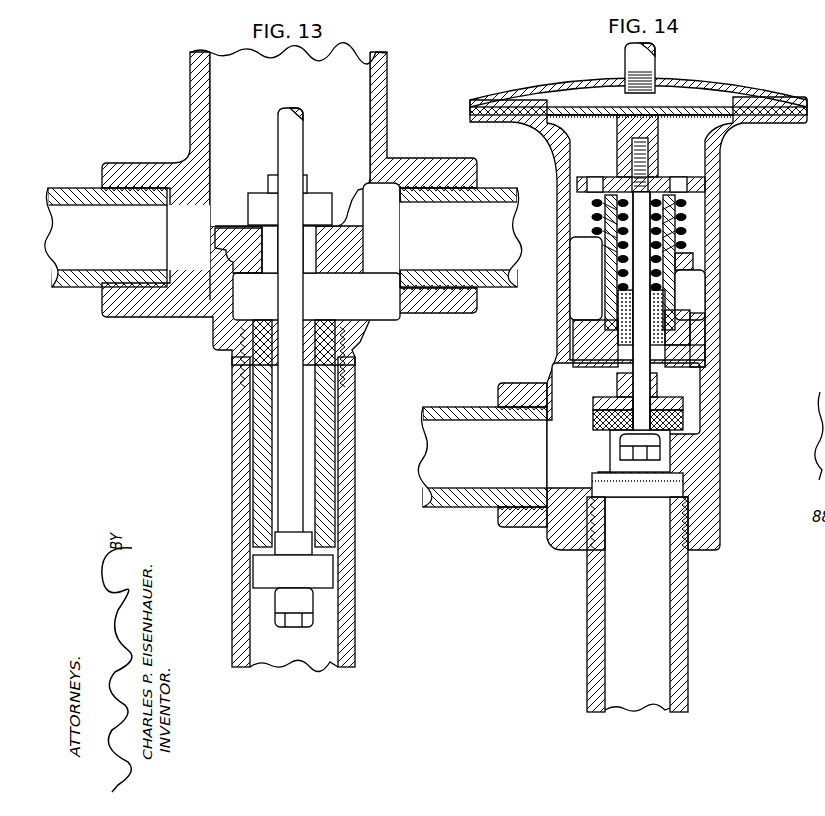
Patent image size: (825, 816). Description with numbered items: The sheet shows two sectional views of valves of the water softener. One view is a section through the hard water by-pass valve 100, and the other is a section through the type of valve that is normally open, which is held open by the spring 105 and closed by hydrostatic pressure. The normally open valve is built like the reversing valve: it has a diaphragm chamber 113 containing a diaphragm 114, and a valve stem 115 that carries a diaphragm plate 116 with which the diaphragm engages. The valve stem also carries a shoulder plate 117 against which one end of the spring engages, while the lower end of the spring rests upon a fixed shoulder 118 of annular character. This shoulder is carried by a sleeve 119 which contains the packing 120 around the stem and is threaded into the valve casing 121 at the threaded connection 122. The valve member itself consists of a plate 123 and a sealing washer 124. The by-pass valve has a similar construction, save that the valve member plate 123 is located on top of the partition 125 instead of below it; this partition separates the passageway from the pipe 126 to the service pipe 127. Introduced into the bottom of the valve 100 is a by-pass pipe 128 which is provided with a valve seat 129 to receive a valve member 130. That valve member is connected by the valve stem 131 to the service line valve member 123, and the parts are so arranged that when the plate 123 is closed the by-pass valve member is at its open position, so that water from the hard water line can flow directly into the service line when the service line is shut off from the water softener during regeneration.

In FIG. 13, the valve 100 is at (190, 62).
In FIG. 14, the spring 105 is at (692, 242).
In FIG. 14, the diaphragm chamber 113 is at (692, 100).
In FIG. 14, the diaphragm 114 is at (715, 108).
In FIG. 14, the valve stem 115 is at (640, 387).
In FIG. 14, the diaphragm plate 116 is at (713, 120).
In FIG. 14, the shoulder plate 117 is at (690, 176).
In FIG. 14, the fixed shoulder 118 is at (687, 260).
In FIG. 14, the sleeve 119 is at (693, 330).
In FIG. 14, the packing 120 is at (658, 315).
In FIG. 14, the valve casing 121 is at (710, 347).
In FIG. 14, the threaded connection 122 is at (683, 353).
In FIG. 13, the plate 123 is at (256, 203).
In FIG. 14, the plate 123 is at (682, 400).
In FIG. 14, the sealing washer 124 is at (682, 420).
In FIG. 13, the partition 125 is at (235, 240).
In FIG. 13, the pipe 126 is at (80, 171).
In FIG. 13, the service pipe 127 is at (498, 188).
In FIG. 13, the by-pass pipe 128 is at (348, 407).
In FIG. 13, the valve seat 129 is at (327, 545).
In FIG. 13, the valve member 130 is at (323, 573).
In FIG. 13, the valve stem 131 is at (298, 294).